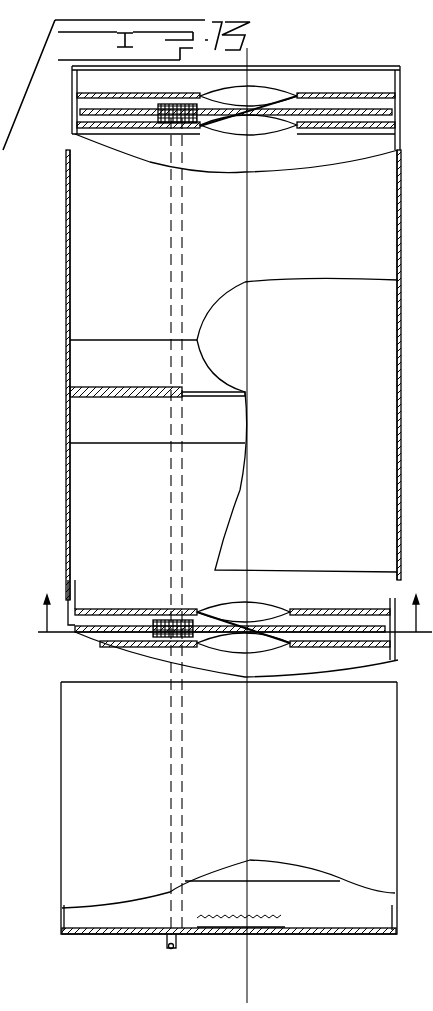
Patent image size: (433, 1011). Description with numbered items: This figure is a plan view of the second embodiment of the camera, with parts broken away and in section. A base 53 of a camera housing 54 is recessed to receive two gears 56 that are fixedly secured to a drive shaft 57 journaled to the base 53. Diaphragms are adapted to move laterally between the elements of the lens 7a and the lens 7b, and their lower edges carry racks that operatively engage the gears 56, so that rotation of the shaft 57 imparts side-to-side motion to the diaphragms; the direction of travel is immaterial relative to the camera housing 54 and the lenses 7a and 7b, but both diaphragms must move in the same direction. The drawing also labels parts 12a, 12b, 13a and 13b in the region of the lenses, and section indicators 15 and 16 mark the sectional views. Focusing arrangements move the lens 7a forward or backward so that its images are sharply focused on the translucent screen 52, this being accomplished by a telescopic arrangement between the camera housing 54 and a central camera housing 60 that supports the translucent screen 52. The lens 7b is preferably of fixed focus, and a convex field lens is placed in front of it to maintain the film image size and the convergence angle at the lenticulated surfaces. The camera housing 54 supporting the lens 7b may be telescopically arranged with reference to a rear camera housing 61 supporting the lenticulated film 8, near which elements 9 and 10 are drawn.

The lens 7a is at (270, 90).
The lens 7b is at (270, 605).
The lenticulated film 8 is at (283, 927).
The heating coil 9 is at (258, 918).
The lead 10 is at (270, 935).
The rod 12a is at (335, 115).
The rod 12b is at (332, 626).
The lever plate 13a is at (323, 99).
The lever plate 13b is at (240, 611).
The section line 15 is at (432, 113).
The section line 16 is at (235, 629).
The translucent screen 52 is at (230, 398).
The base 53 is at (295, 856).
The camera housing 54 is at (402, 114).
The gears 56 is at (172, 105).
The drive shaft 57 is at (184, 497).
The central camera housing 60 is at (405, 388).
The rear camera housing 61 is at (397, 919).